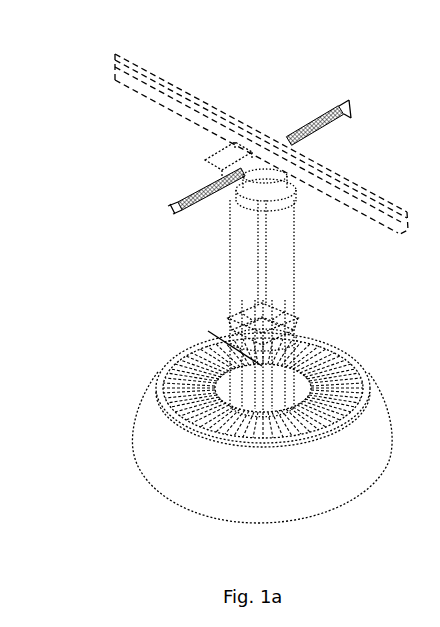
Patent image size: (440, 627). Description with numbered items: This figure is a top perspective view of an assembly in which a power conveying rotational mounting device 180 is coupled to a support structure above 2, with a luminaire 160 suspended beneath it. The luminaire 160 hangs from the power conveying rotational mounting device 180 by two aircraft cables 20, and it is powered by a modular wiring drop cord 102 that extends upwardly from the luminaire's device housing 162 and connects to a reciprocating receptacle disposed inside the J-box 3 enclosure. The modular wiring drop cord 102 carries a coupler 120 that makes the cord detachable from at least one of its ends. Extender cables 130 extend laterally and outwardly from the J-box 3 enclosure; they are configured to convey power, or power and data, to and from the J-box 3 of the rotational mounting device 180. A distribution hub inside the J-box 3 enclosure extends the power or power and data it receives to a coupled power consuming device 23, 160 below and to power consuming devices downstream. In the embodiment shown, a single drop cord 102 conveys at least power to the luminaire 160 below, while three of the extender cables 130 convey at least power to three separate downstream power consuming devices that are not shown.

The support structure above 2 is at (386, 197).
The J-box 3 is at (262, 160).
The aircraft cables 20 is at (231, 272).
The power consuming device 23 is at (148, 431).
The modular wiring drop cord 102 is at (260, 244).
The coupler 120 is at (236, 305).
The extender cables 130 is at (304, 126).
The luminaire 160 is at (148, 431).
The device housing 162 is at (227, 333).
The power conveying rotational mounting device 180 is at (216, 158).